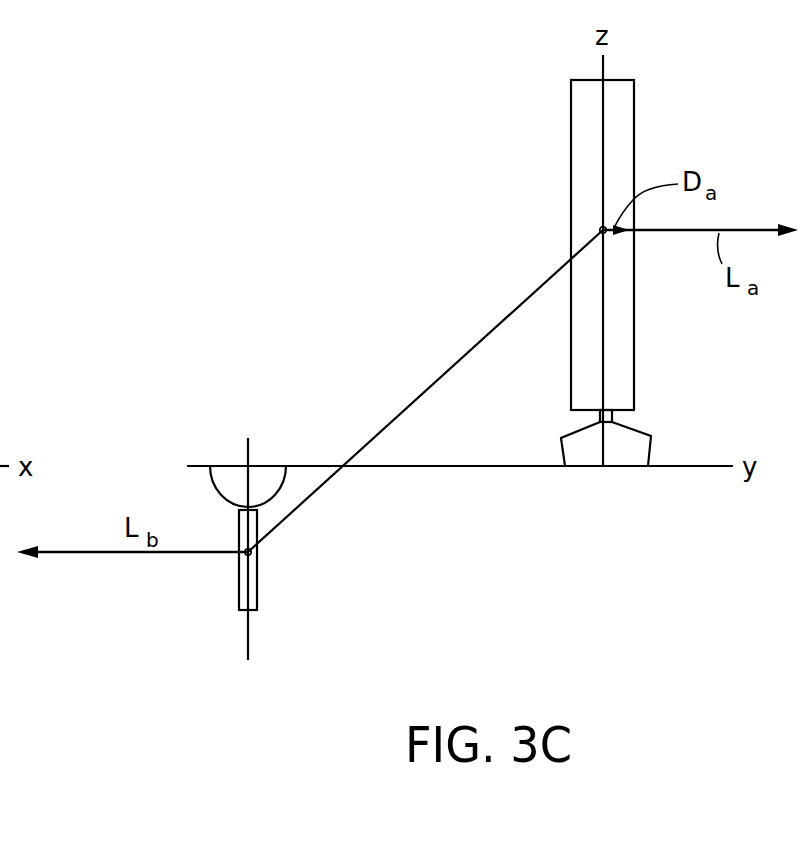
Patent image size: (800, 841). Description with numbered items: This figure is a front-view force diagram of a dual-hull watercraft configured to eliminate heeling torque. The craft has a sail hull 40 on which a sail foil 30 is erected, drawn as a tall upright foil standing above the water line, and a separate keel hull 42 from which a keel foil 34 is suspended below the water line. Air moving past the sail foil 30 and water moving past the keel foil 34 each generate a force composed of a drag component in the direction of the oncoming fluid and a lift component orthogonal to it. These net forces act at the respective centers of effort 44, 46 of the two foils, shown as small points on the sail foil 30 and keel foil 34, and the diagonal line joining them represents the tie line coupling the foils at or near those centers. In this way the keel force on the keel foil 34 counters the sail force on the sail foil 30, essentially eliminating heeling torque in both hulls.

The sail foil 30 is at (625, 128).
The keel foil 34 is at (258, 590).
The sail hull 40 is at (637, 437).
The keel hull 42 is at (228, 464).
The center of effort 44 is at (599, 228).
The center of effort 46 is at (244, 556).